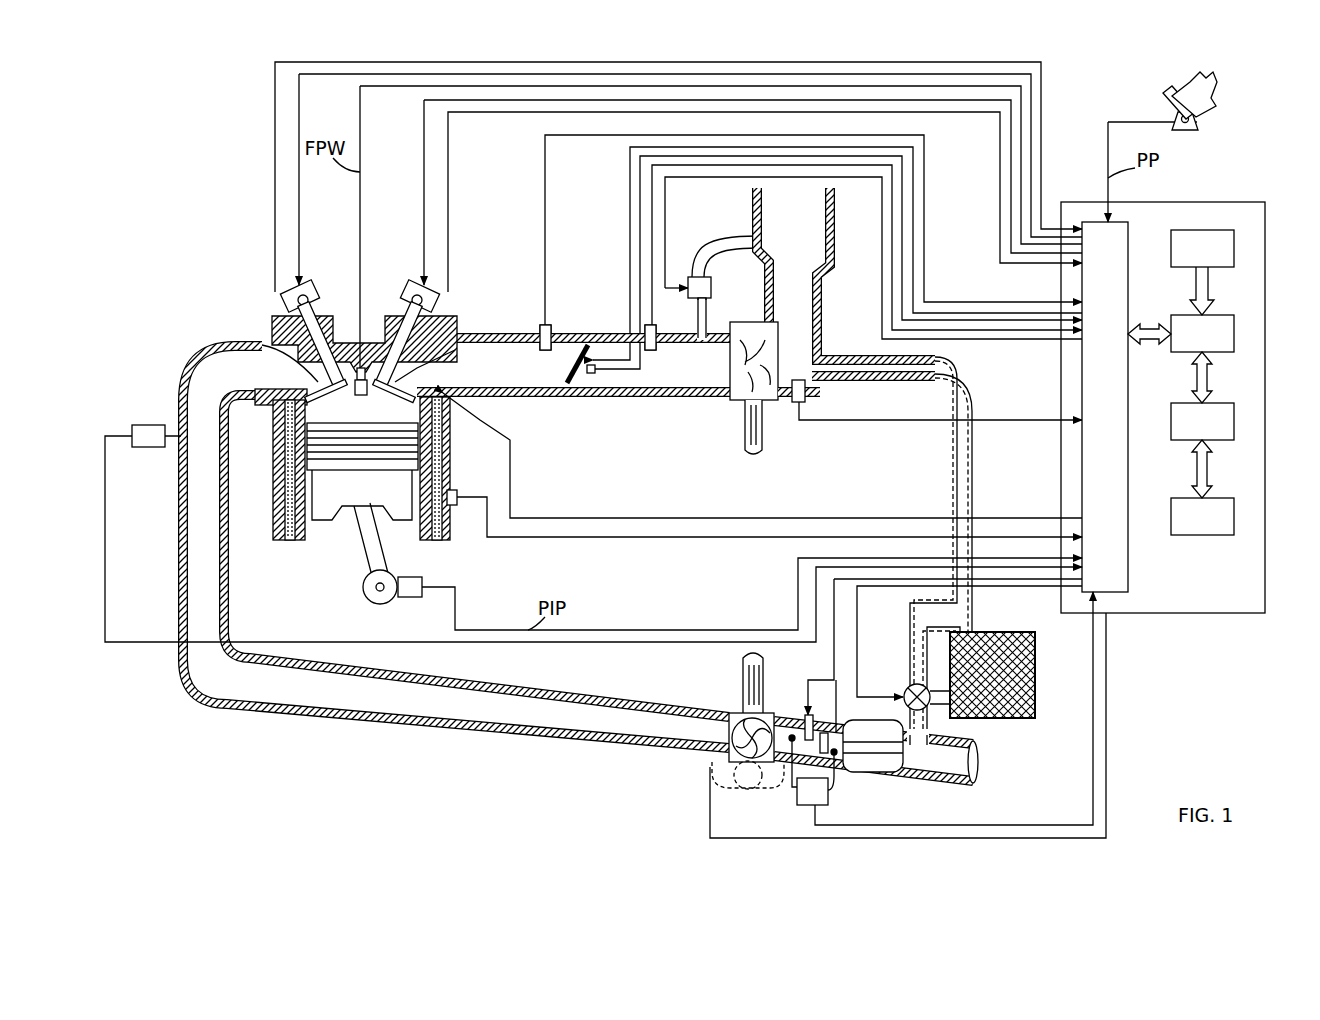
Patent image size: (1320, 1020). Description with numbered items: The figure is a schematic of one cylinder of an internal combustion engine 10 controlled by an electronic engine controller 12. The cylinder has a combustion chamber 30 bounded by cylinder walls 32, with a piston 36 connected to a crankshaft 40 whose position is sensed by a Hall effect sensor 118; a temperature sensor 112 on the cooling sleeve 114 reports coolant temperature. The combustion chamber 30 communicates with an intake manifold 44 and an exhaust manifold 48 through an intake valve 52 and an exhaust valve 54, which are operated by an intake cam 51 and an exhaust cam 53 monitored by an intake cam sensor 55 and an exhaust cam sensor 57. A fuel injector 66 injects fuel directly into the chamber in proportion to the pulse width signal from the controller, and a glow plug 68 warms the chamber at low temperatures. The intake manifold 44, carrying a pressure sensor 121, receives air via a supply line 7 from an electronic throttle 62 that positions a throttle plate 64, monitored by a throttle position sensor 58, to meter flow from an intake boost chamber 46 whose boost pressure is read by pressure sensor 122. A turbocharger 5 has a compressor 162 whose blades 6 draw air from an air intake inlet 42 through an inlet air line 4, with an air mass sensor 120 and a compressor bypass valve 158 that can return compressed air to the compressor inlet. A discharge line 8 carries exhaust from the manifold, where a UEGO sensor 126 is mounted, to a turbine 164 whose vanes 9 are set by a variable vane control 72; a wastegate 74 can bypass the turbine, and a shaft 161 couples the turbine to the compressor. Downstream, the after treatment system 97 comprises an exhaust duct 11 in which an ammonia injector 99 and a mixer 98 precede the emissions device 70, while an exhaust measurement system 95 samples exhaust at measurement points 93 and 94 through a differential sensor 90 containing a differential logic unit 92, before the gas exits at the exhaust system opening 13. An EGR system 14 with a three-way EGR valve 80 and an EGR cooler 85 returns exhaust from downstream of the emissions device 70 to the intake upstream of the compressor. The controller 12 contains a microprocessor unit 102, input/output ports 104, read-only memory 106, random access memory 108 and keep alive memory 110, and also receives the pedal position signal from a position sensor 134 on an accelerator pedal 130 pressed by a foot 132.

The inlet air line 4 is at (822, 320).
The turbocharger 5 is at (686, 445).
The compressor vanes or blades 6 is at (740, 335).
The supply line 7 is at (504, 398).
The discharge line 8 is at (346, 711).
The turbine vane or blade 9 is at (764, 720).
The internal combustion engine 10 is at (214, 274).
The exhaust duct 11 is at (805, 722).
The electronic engine controller 12 is at (1255, 202).
The exhaust system opening 13 is at (978, 766).
The EGR system 14 is at (1045, 690).
The combustion chamber 30 is at (330, 450).
The cylinder walls 32 is at (305, 545).
The piston 36 is at (360, 500).
The crankshaft 40 is at (368, 600).
The air intake inlet 42 is at (779, 255).
The intake manifold 44 is at (573, 365).
The intake boost chamber 46 is at (663, 366).
The exhaust manifold 48 is at (456, 547).
The intake cam 51 is at (415, 290).
The intake valve 52 is at (410, 376).
The exhaust cam 53 is at (308, 290).
The exhaust valve 54 is at (318, 388).
The intake cam sensor 55 is at (430, 300).
The exhaust cam sensor 57 is at (298, 300).
The throttle position sensor 58 is at (596, 372).
The electronic throttle 62 is at (549, 326).
The throttle plate 64 is at (582, 345).
The fuel injector 66 is at (357, 368).
The glow plug 68 is at (462, 412).
The emissions device 70 is at (868, 771).
The variable vane control 72 is at (727, 756).
The wastegate 74 is at (748, 789).
The EGR valve 80 is at (905, 692).
The EGR cooler 85 is at (1036, 680).
The differential sensor 90 is at (796, 813).
The differential logic unit 92 is at (945, 708).
The measurement point 93 is at (790, 760).
The measurement point 94 is at (836, 770).
The exhaust measurement system 95 is at (862, 792).
The after treatment system 97 is at (924, 793).
The mixer 98 is at (828, 733).
The ammonia injector 99 is at (810, 712).
The microprocessor unit 102 is at (1234, 330).
The input/output ports 104 is at (1130, 230).
The read-only memory 106 is at (1234, 245).
The random access memory 108 is at (1234, 418).
The keep alive memory 110 is at (1234, 512).
The temperature sensor 112 is at (457, 492).
The cooling sleeve 114 is at (285, 461).
The Hall effect sensor 118 is at (407, 597).
The air mass sensor 120 is at (805, 395).
The pressure sensor 121 is at (540, 325).
The pressure sensor 122 is at (656, 327).
The UEGO sensor 126 is at (134, 433).
The accelerator pedal 130 is at (1168, 100).
The foot 132 is at (1220, 88).
The position sensor 134 is at (1200, 122).
The compressor bypass valve 158 is at (692, 277).
The shaft 161 is at (745, 446).
The compressor 162 is at (724, 398).
The turbine 164 is at (733, 713).